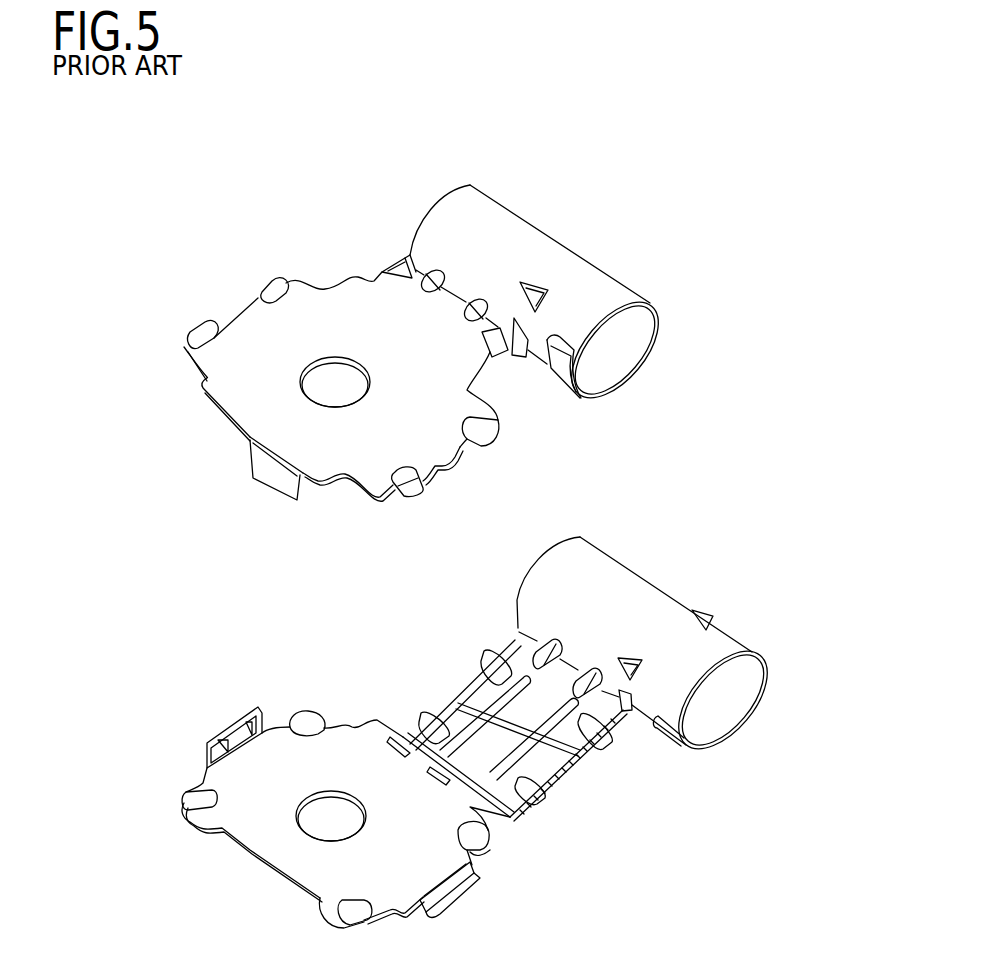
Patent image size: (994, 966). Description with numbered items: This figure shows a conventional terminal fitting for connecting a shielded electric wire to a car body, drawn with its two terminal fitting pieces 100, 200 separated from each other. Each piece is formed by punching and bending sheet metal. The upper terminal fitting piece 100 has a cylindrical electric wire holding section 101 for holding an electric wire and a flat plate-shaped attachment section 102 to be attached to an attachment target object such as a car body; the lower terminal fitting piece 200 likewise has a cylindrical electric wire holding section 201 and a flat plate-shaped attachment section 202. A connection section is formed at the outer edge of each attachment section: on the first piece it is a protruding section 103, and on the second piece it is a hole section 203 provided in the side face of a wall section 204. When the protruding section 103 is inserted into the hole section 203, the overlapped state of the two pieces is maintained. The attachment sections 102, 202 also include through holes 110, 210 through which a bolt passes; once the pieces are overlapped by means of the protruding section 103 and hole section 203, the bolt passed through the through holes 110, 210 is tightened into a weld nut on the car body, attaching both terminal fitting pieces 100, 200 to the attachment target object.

The terminal fitting piece 100 is at (686, 368).
The electric wire holding section 101 is at (600, 290).
The attachment section 102 is at (250, 327).
The protruding section 103 is at (450, 462).
The through hole 110 is at (338, 384).
The terminal fitting piece 200 is at (782, 641).
The electric wire holding section 201 is at (625, 585).
The attachment section 202 is at (337, 720).
The hole section 203 is at (462, 902).
The wall section 204 is at (472, 872).
The through hole 210 is at (334, 826).